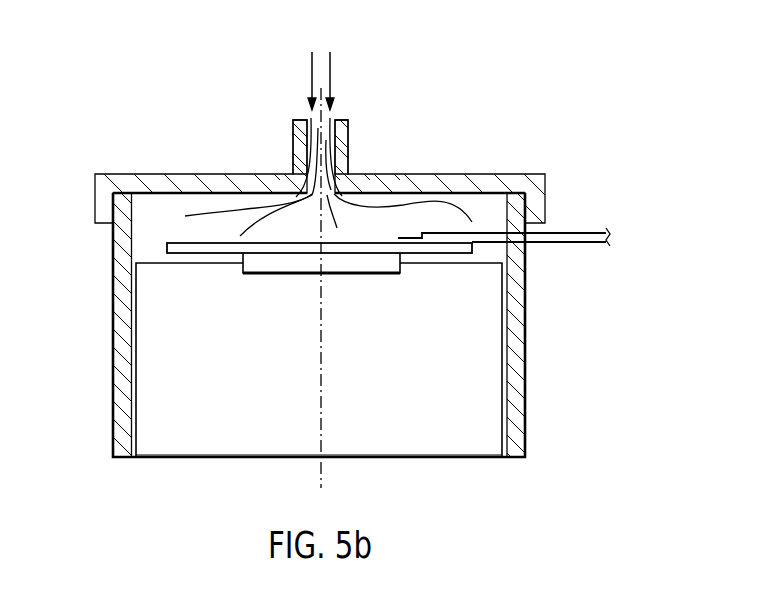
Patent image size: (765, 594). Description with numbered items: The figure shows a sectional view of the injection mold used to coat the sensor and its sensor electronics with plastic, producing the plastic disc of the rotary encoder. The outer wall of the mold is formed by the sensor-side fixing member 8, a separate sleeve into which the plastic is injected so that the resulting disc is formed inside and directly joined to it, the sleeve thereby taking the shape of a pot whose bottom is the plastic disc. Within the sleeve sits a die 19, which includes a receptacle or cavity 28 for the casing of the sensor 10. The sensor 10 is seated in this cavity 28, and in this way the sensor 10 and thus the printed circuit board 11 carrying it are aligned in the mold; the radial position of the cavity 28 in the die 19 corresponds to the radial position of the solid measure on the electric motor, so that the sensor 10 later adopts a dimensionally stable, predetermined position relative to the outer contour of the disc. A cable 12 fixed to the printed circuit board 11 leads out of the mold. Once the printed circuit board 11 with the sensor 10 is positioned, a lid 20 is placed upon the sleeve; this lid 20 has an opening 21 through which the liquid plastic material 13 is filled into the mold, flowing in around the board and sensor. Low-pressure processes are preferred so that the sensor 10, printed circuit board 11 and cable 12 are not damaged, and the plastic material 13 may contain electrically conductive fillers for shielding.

The sensor-side fixing member 8 is at (514, 372).
The sensor 10 is at (380, 258).
The printed circuit board 11 is at (188, 252).
The cable 12 is at (576, 240).
The liquid plastic material 13 is at (328, 130).
The die 19 is at (392, 447).
The lid 20 is at (529, 186).
The opening 21 is at (332, 126).
The cavity 28 is at (238, 271).